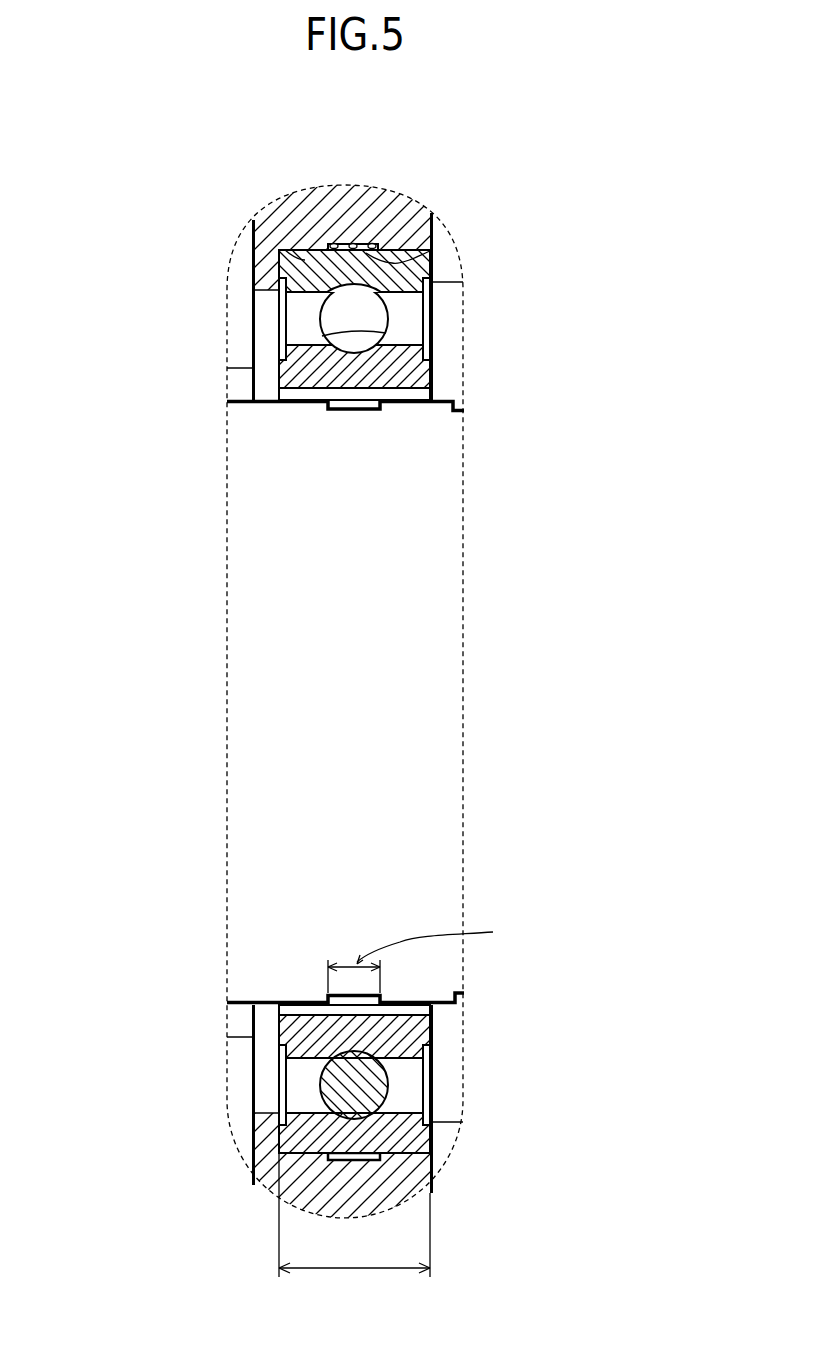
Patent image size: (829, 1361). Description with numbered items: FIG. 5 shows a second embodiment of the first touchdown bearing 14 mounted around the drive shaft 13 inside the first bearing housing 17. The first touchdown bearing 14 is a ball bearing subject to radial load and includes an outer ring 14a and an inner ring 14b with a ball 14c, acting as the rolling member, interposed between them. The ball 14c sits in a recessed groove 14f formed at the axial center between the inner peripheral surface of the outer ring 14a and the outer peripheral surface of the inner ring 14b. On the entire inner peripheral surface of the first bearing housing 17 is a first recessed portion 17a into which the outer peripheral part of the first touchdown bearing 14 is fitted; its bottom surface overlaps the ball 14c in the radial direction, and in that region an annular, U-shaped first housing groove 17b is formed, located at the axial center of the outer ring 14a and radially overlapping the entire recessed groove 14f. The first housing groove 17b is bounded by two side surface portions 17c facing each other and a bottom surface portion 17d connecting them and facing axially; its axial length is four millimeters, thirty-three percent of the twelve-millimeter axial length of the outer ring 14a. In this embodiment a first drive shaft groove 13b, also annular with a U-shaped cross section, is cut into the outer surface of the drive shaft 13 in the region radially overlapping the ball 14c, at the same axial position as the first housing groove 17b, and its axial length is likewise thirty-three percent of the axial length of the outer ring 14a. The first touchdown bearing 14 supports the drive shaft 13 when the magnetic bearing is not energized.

The drive shaft 13 is at (430, 692).
The first drive shaft groove 13b is at (357, 409).
The first touchdown bearing 14 is at (345, 701).
The outer ring 14a is at (433, 272).
The inner ring 14b is at (280, 377).
The ball 14c is at (322, 312).
The recessed groove 14f is at (323, 338).
The first bearing housing 17 is at (361, 188).
The first recessed portion 17a is at (285, 250).
The first housing groove 17b is at (432, 250).
The side surface portions 17c is at (333, 243).
The bottom surface portion 17d is at (352, 243).